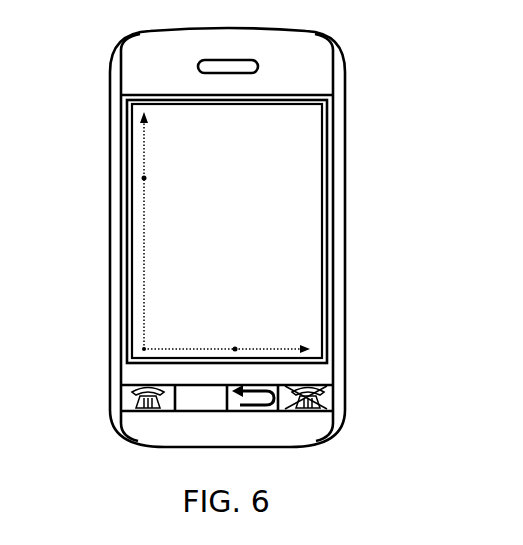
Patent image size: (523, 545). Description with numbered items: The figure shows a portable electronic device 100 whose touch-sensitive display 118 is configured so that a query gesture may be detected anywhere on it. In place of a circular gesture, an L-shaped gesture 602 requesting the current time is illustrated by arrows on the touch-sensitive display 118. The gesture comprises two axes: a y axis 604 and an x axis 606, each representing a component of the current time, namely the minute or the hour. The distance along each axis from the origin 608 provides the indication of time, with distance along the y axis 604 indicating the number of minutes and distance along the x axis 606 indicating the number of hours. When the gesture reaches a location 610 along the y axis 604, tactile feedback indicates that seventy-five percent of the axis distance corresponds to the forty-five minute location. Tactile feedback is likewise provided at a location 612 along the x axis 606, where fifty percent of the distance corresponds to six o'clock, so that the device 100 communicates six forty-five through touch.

The portable electronic device 100 is at (82, 468).
The touch-sensitive display 118 is at (310, 120).
The L-shaped gesture 602 is at (144, 136).
The y axis 604 is at (142, 236).
The x axis 606 is at (282, 350).
The origin 608 is at (143, 350).
The location along the y axis 610 is at (143, 178).
The location along the x axis 612 is at (235, 349).